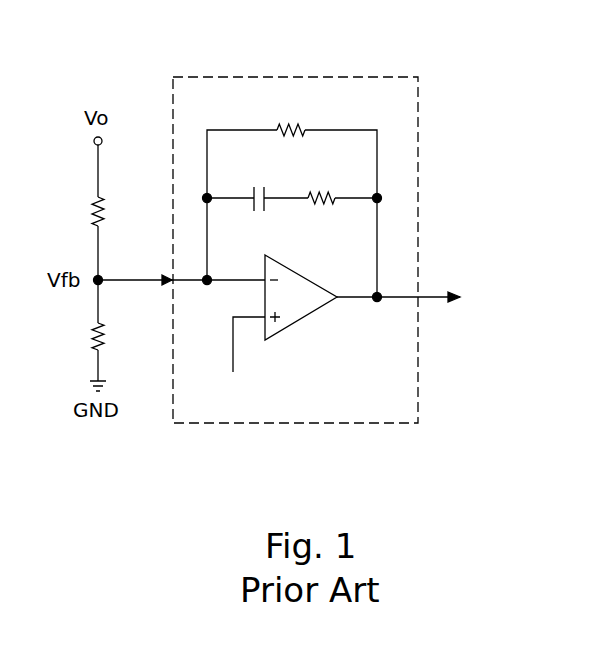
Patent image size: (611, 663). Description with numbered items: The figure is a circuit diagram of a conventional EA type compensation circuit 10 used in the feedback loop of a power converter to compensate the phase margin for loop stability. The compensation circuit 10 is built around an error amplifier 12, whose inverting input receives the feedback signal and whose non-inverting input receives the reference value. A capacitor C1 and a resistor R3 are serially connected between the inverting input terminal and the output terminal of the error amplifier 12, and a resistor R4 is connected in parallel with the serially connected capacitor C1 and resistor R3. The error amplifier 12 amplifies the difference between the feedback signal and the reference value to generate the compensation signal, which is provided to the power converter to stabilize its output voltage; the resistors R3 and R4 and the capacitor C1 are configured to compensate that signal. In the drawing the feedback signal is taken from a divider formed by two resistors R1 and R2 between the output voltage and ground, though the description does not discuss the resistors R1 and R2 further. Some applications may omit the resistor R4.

The EA type compensation circuit 10 is at (291, 77).
The error amplifier 12 is at (303, 318).
The feedback resistor R1 is at (115, 211).
The feedback resistor R2 is at (115, 337).
The resistor R3 is at (320, 184).
The resistor R4 is at (291, 116).
The capacitor C1 is at (255, 185).